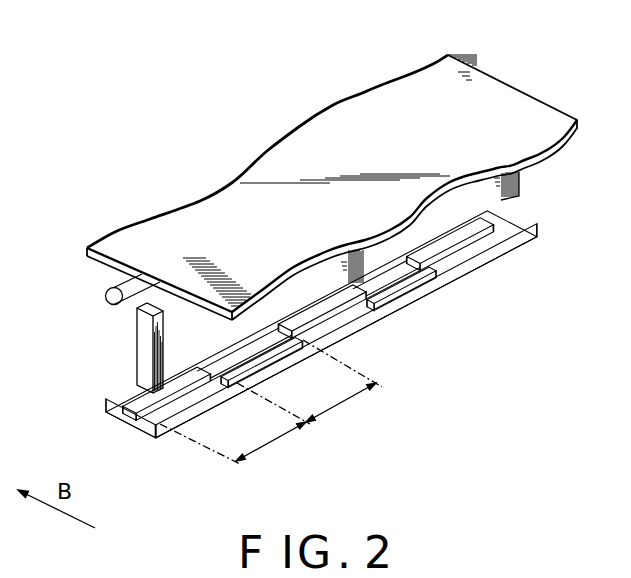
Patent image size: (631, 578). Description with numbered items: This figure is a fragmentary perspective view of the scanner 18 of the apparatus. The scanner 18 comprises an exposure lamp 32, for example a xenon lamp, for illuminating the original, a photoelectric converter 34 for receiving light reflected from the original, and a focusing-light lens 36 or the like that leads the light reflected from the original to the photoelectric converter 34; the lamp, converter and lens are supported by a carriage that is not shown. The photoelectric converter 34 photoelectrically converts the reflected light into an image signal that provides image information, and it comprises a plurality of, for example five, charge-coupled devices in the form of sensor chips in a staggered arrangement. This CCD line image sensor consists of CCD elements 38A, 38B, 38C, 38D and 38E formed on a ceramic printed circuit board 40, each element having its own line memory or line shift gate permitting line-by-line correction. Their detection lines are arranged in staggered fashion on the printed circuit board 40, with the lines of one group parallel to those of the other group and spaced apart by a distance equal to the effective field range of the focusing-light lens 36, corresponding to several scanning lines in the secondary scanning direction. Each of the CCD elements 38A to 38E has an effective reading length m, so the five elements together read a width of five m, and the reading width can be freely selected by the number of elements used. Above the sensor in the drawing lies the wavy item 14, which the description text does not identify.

The wavy cover plate 14 is at (519, 93).
The scanner 18 is at (497, 397).
The exposure lamp 32 is at (106, 297).
The photoelectric converter 34 is at (173, 447).
The focusing-light lens 36 is at (135, 356).
The CCD element 38A is at (123, 403).
The CCD element 38B is at (248, 363).
The CCD element 38C is at (302, 320).
The CCD element 38D is at (408, 291).
The CCD element 38E is at (490, 223).
The ceramic printed circuit board 40 is at (536, 236).